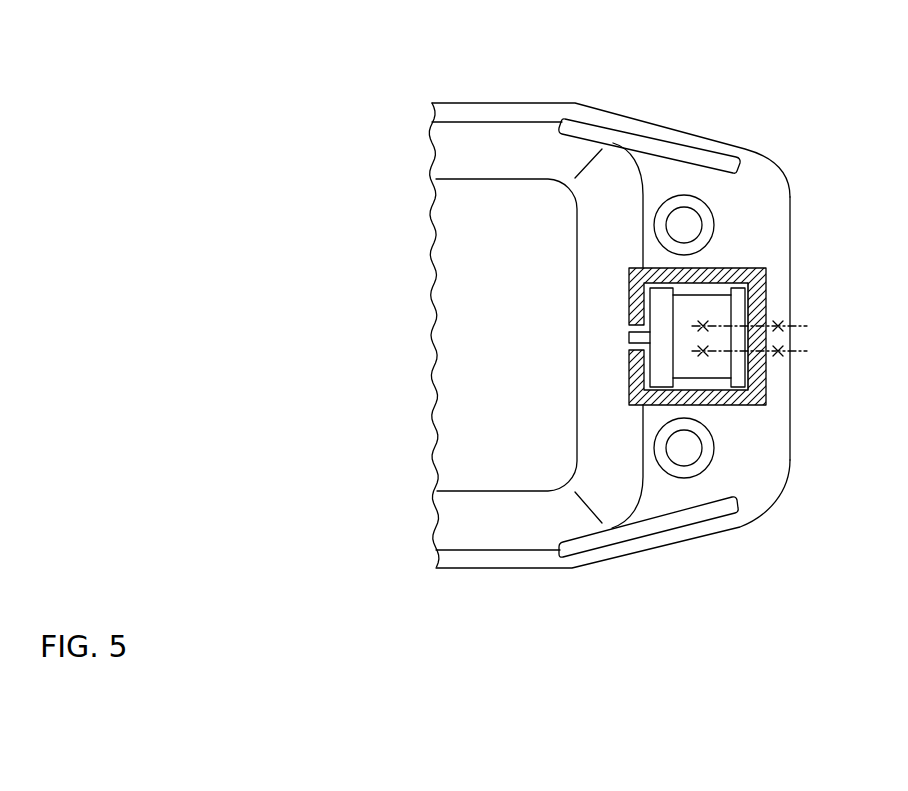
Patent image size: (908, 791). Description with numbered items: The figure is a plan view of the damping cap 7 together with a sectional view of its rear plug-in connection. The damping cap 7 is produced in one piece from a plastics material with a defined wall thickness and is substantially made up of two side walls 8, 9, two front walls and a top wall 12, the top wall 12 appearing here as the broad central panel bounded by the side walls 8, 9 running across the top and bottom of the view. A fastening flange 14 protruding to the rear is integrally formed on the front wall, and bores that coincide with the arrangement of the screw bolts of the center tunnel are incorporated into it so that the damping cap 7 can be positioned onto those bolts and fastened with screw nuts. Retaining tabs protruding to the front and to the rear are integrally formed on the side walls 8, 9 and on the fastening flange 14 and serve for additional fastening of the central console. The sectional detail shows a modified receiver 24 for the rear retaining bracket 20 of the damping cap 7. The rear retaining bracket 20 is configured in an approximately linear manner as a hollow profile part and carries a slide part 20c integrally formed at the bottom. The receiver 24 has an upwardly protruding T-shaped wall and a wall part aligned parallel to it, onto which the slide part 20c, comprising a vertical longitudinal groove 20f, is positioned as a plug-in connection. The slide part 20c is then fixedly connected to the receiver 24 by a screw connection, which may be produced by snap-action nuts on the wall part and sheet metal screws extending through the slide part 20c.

The damping cap 7 is at (536, 90).
The side wall 8 is at (474, 561).
The side wall 9 is at (467, 127).
The top wall 12 is at (508, 248).
The fastening flange 14 is at (767, 183).
The rear retaining bracket 20 is at (741, 261).
The slide part 20c is at (762, 307).
The vertical longitudinal groove 20f is at (634, 377).
The receiver 24 is at (698, 378).